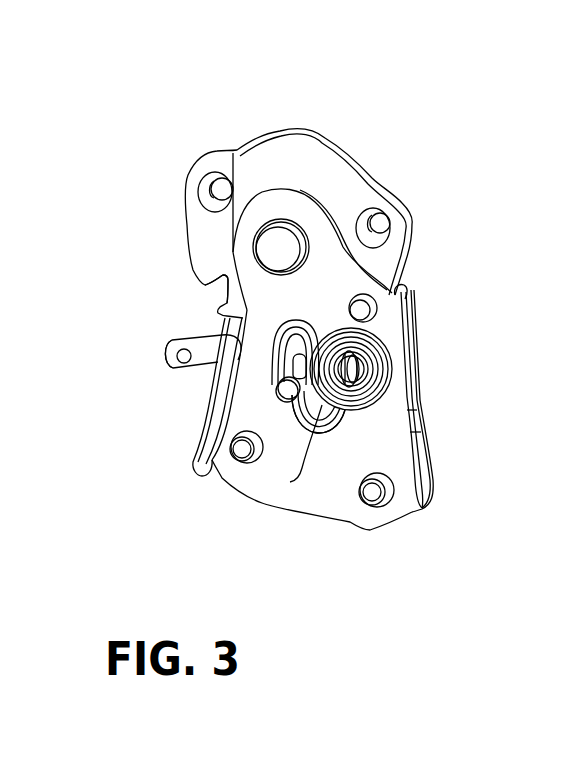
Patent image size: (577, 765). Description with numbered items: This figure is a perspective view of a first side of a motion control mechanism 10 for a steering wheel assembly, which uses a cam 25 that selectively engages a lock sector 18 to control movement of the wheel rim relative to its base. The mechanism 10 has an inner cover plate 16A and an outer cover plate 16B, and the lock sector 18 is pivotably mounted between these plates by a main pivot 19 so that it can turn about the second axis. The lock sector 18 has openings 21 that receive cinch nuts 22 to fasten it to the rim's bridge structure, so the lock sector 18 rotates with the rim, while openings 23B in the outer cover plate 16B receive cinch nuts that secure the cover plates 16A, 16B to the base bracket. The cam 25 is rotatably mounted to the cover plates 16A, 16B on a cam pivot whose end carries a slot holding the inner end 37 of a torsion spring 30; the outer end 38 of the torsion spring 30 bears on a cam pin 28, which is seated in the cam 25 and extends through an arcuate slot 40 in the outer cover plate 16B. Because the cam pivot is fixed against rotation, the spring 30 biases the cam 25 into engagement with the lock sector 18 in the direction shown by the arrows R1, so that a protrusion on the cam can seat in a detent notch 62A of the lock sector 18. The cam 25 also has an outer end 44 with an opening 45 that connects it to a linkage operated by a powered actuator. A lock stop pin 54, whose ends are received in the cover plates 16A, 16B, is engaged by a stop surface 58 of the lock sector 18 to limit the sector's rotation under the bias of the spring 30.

The motion control mechanism 10 is at (403, 310).
The inner cover plate 16A is at (442, 435).
The outer cover plate 16B is at (214, 485).
The lock sector 18 is at (332, 125).
The main pivot 19 is at (272, 247).
The openings 21 is at (228, 190).
The cinch nuts 22 is at (198, 190).
The openings 23B is at (242, 465).
The cam 25 is at (181, 382).
The cam pin 28 is at (277, 385).
The torsion spring 30 is at (363, 308).
The inner end 37 is at (366, 367).
The outer end 38 is at (290, 403).
The arcuate slot 40 is at (297, 470).
The outer end 44 is at (180, 350).
The opening 45 is at (180, 367).
The lock stop pin 54 is at (387, 347).
The stop surface 58 is at (432, 256).
The detent notch 62A is at (200, 284).
The arrows R1 is at (150, 325).